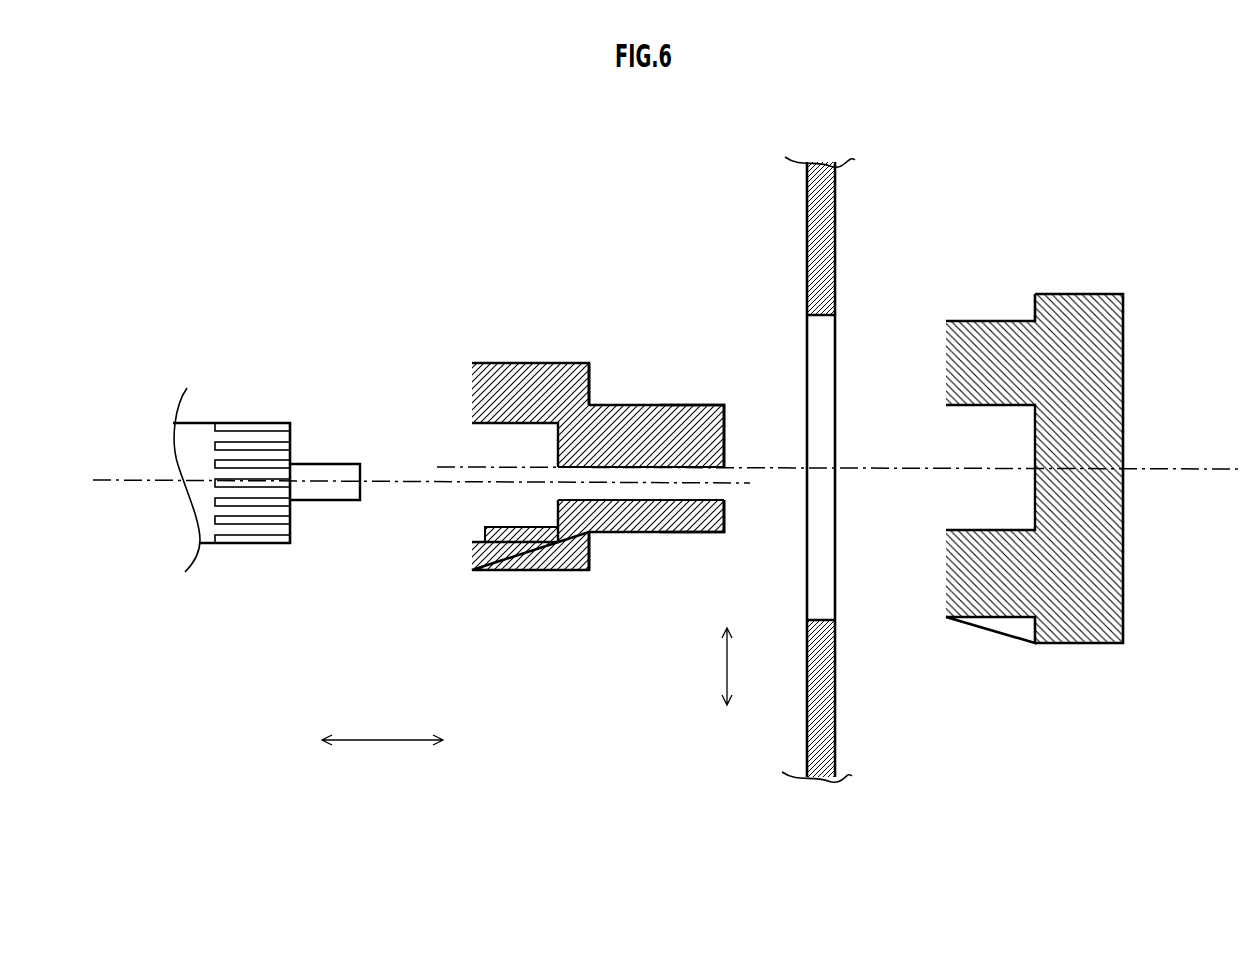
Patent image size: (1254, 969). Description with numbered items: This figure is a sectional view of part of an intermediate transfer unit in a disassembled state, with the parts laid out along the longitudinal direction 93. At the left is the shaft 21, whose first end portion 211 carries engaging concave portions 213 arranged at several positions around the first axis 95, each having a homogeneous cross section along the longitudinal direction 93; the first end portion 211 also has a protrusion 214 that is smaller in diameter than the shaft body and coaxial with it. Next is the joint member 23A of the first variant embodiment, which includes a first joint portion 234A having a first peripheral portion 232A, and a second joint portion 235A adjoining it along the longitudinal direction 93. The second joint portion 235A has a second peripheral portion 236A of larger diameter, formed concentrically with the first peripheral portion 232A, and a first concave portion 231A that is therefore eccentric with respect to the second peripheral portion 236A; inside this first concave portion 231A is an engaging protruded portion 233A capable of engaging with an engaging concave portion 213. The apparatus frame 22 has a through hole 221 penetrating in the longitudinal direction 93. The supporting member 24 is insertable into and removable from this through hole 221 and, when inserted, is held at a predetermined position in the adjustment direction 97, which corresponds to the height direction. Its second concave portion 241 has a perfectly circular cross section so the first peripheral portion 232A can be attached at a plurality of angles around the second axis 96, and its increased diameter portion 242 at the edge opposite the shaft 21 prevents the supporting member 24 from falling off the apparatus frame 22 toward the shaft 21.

The shaft 21 is at (266, 441).
The first end portion 211 is at (207, 535).
The engaging concave portion 213 is at (260, 427).
The protrusion 214 is at (330, 495).
The apparatus frame 22 is at (849, 469).
The through hole 221 is at (843, 342).
The joint member 23A is at (561, 444).
The first concave portion 231A is at (472, 495).
The first peripheral portion 232A is at (707, 405).
The engaging protruded portion 233A is at (535, 513).
The first joint portion 234A is at (637, 405).
The second joint portion 235A is at (490, 362).
The second peripheral portion 236A is at (555, 362).
The supporting member 24 is at (999, 427).
The second concave portion 241 is at (946, 499).
The increased diameter portion 242 is at (1072, 294).
The longitudinal direction 93 is at (382, 726).
The first axis 95 is at (117, 480).
The second axis 96 is at (1215, 467).
The adjustment direction 97 is at (740, 666).